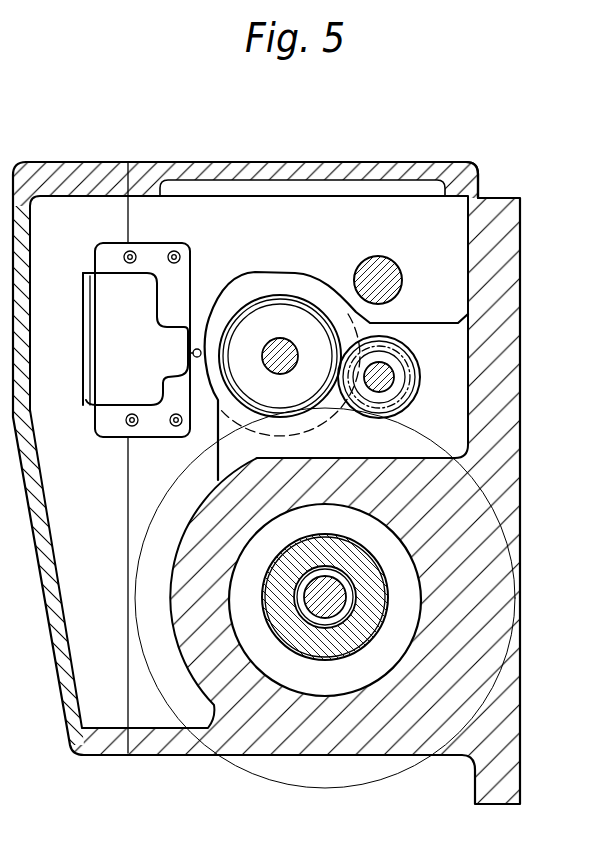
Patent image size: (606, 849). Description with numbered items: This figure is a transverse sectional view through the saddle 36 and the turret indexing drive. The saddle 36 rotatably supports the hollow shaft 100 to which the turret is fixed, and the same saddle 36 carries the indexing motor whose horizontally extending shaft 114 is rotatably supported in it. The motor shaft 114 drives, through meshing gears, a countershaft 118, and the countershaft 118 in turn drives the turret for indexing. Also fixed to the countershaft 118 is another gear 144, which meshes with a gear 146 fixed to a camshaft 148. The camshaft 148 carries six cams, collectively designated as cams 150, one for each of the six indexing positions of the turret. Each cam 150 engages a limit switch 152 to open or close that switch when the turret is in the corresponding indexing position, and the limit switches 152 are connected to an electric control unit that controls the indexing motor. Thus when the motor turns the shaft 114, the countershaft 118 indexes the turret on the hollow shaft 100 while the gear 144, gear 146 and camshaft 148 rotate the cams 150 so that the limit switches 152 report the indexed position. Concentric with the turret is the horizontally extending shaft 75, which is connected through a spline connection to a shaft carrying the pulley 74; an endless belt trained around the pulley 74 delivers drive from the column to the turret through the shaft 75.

The saddle 36 is at (278, 171).
The limit switch 152 is at (97, 302).
The cams 150 is at (231, 278).
The gear 146 is at (275, 312).
The camshaft 148 is at (292, 342).
The shaft 114 is at (380, 258).
The countershaft 118 is at (394, 377).
The gear 144 is at (408, 395).
The hollow shaft 100 is at (378, 587).
The shaft 75 is at (340, 607).
The pulley 74 is at (406, 772).